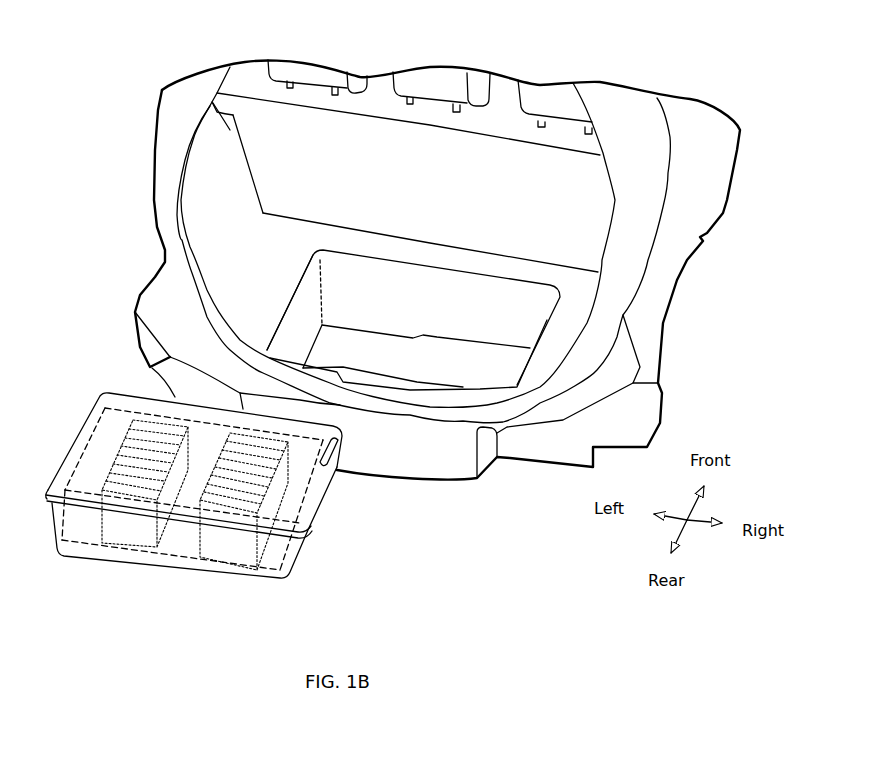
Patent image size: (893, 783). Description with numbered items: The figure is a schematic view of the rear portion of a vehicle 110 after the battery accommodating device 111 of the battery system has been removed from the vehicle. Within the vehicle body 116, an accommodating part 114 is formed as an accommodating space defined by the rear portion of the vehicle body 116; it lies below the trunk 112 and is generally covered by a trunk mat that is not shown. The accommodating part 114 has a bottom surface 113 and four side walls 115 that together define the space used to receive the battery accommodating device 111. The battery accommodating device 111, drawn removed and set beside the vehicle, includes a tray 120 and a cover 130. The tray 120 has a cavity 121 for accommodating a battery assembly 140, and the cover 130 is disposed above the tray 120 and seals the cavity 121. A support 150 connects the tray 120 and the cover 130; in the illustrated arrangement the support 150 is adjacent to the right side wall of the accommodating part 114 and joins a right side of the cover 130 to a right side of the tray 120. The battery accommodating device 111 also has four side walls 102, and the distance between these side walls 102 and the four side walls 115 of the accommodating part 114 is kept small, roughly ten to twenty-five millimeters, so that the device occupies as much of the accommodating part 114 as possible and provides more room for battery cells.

The vehicle 110 is at (699, 77).
The battery accommodating device 111 is at (127, 390).
The trunk 112 is at (277, 157).
The bottom surface 113 is at (429, 371).
The accommodating part 114 is at (527, 333).
The side walls 115 is at (431, 310).
The vehicle body 116 is at (292, 303).
The tray 120 is at (50, 522).
The cavity 121 is at (83, 545).
The cover 130 is at (46, 493).
The battery assembly 140 is at (125, 542).
The support 150 is at (340, 450).
The side walls of the battery accommodating device 102 is at (180, 558).